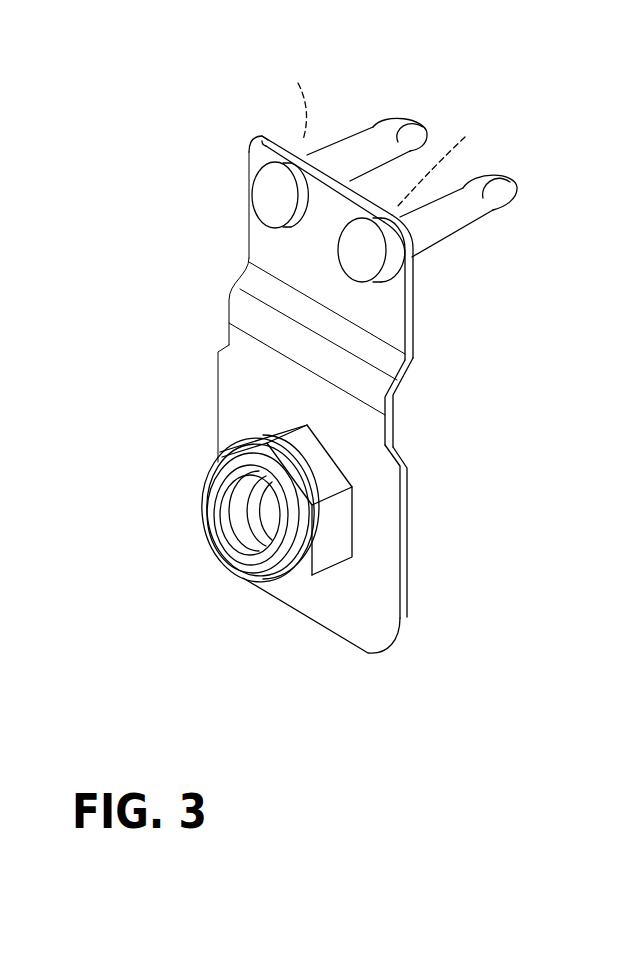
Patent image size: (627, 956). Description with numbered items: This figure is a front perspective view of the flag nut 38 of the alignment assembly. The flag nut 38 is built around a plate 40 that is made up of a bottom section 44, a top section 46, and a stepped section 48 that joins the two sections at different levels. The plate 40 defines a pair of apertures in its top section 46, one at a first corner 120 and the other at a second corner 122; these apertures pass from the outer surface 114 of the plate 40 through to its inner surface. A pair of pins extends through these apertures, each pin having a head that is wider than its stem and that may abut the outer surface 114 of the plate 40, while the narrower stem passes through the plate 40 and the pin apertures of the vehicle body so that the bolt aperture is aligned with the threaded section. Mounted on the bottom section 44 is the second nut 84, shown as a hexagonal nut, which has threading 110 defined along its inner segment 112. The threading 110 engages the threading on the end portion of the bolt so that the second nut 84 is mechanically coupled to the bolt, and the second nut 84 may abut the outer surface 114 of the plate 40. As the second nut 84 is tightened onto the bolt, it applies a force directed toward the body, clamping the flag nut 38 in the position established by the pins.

The flag nut 38 is at (354, 380).
The plate 40 is at (279, 532).
The bottom section 44 is at (373, 628).
The top section 46 is at (372, 230).
The stepped section 48 is at (380, 398).
The second nut 84 is at (229, 552).
The threading 110 is at (236, 492).
The inner segment 112 is at (250, 515).
The outer surface 114 is at (307, 587).
The first corner 120 is at (258, 147).
The second corner 122 is at (397, 238).